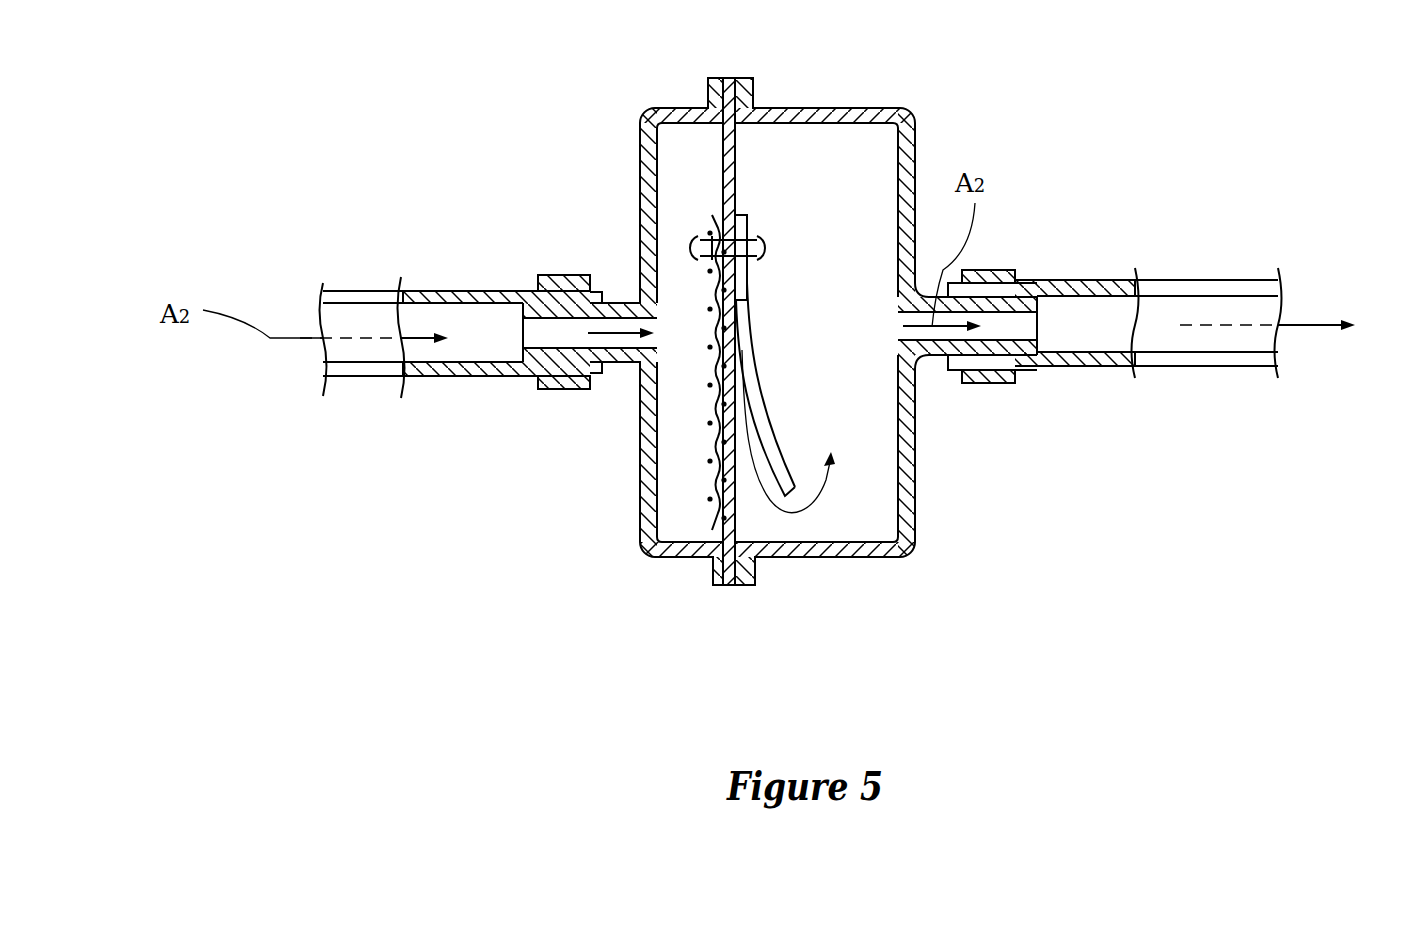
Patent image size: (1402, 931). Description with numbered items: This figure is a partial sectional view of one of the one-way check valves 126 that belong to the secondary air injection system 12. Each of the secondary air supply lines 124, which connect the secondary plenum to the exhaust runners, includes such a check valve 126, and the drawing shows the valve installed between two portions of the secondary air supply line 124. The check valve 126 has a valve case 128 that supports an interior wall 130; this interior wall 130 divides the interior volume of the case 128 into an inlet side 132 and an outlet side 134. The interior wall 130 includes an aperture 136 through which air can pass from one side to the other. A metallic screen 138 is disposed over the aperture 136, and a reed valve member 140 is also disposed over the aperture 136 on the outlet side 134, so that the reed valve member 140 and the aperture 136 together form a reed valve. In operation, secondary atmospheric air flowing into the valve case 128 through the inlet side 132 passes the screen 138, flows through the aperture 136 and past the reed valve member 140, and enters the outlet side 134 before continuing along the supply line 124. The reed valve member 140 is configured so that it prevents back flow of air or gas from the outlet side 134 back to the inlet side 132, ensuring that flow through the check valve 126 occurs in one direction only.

The secondary air injection system 12 is at (1236, 612).
The secondary air supply line 124 is at (350, 380).
The one-way check valve 126 is at (1060, 534).
The valve case 128 is at (817, 557).
The interior wall 130 is at (738, 160).
The inlet side 132 is at (670, 148).
The outlet side 134 is at (865, 148).
The aperture 136 is at (742, 445).
The metallic screen 138 is at (713, 490).
The reed valve member 140 is at (762, 400).